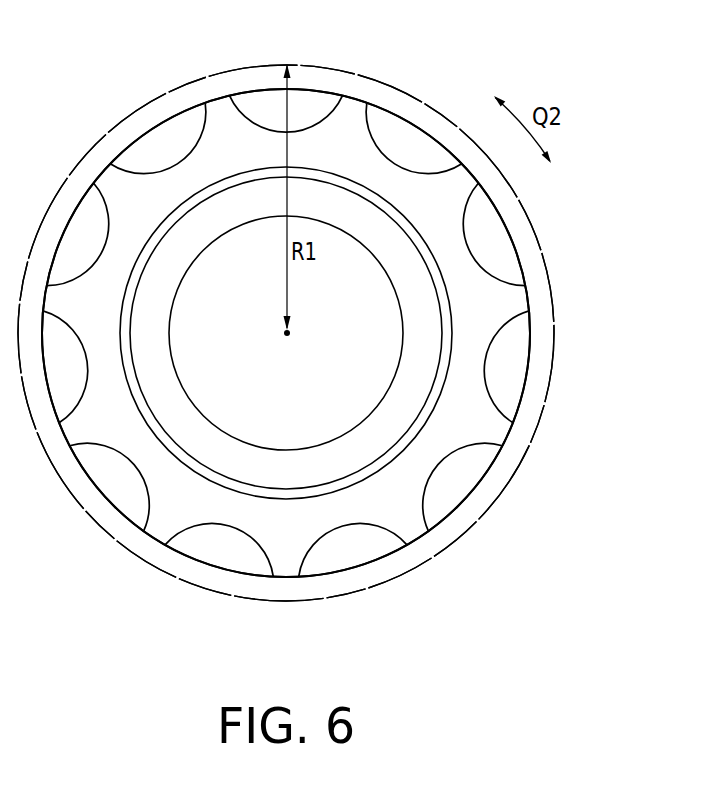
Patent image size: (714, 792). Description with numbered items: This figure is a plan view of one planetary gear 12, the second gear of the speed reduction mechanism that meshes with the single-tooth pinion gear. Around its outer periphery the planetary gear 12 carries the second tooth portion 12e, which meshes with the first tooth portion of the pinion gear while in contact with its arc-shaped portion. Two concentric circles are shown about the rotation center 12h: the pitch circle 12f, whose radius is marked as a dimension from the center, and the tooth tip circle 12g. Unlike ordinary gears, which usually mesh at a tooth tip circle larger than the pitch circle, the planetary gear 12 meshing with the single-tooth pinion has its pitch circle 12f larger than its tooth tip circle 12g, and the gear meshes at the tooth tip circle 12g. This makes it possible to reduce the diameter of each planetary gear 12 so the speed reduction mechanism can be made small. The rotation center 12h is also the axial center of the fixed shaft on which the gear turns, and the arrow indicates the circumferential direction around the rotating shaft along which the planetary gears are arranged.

The planetary gear 12 is at (507, 437).
The second tooth portion 12e is at (472, 248).
The pitch circle 12f is at (553, 297).
The tooth tip circle 12g is at (530, 363).
The rotation center 12h is at (290, 333).